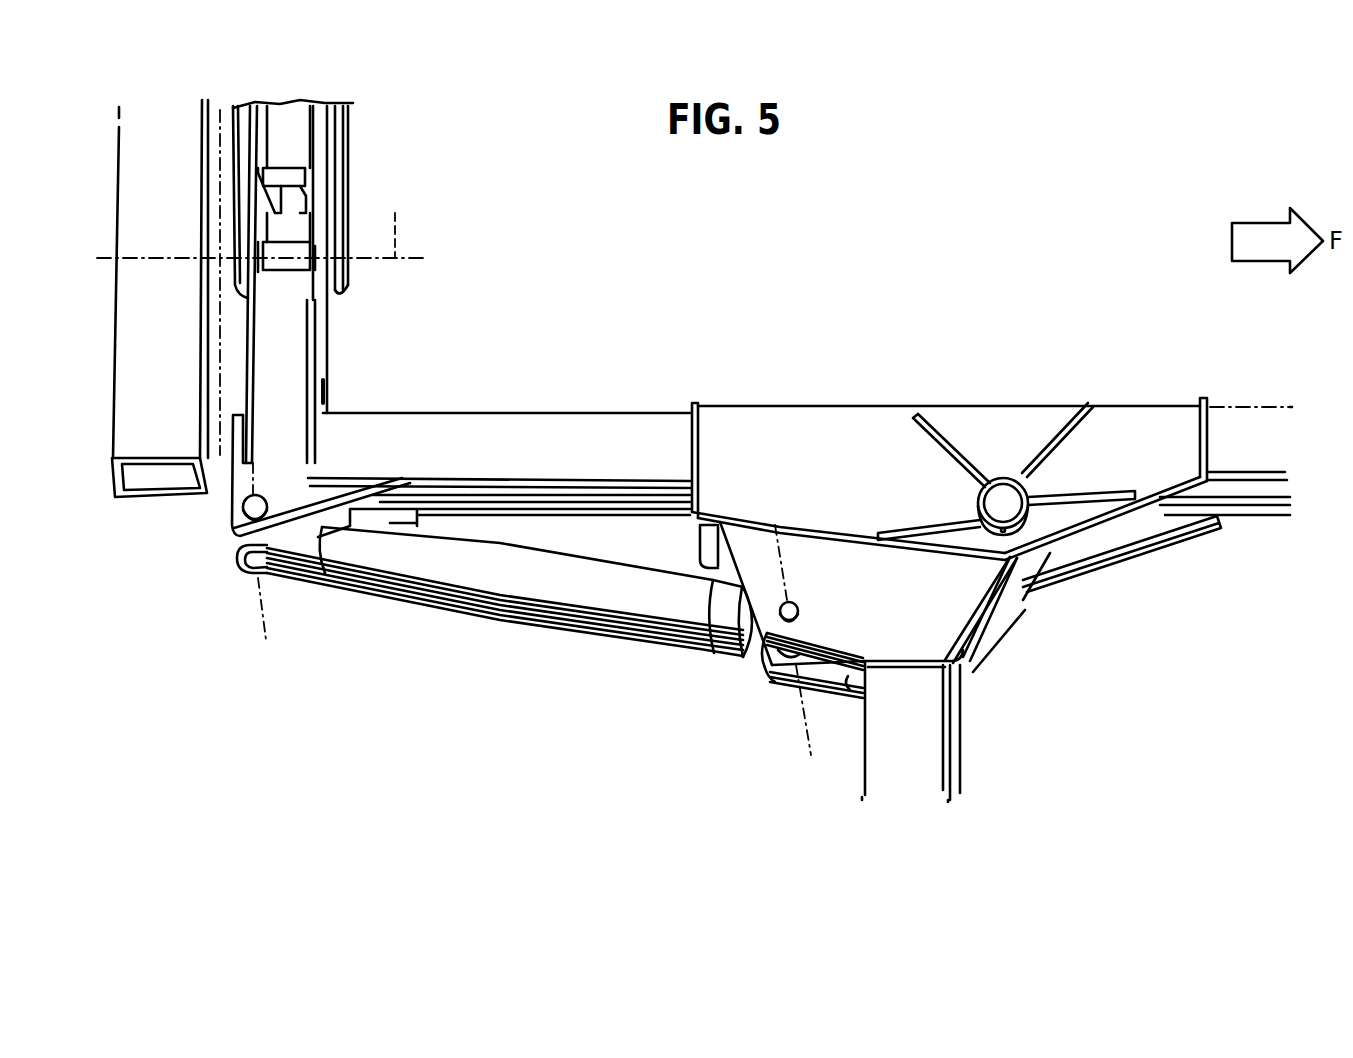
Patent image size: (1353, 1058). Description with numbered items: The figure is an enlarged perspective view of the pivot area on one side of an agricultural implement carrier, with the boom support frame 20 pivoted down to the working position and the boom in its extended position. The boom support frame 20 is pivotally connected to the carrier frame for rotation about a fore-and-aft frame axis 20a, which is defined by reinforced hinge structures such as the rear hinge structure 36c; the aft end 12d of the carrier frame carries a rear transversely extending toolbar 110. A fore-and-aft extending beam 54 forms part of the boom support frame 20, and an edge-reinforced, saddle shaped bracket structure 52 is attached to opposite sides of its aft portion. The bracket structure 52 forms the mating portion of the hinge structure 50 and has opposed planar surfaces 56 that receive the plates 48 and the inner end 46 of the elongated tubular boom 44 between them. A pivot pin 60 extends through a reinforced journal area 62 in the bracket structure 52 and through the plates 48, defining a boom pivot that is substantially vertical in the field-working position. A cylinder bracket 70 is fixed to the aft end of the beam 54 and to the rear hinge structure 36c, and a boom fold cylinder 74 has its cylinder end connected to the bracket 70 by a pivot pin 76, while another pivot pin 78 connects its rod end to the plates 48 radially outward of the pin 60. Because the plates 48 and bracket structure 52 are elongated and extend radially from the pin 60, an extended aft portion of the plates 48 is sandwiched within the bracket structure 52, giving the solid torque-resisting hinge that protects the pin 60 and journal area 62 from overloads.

The rear toolbar 110 is at (129, 141).
The aft end 12d is at (350, 103).
The boom support frame 20 is at (630, 366).
The frame axis 20a is at (395, 213).
The hinge structure 36c is at (337, 293).
The boom 44 is at (938, 748).
The inner end 46 is at (850, 676).
The plates 48 is at (944, 614).
The hinge structure 50 is at (1042, 388).
The bracket structure 52 is at (906, 470).
The beam 54 is at (546, 440).
The opposed planar surfaces 56 is at (1140, 530).
The pivot pin 60 is at (1000, 495).
The journal area 62 is at (1037, 489).
The cylinder bracket 70 is at (247, 530).
The boom fold cylinder 74 is at (553, 593).
The pivot pin 76 is at (248, 518).
The pivot pin 78 is at (796, 600).